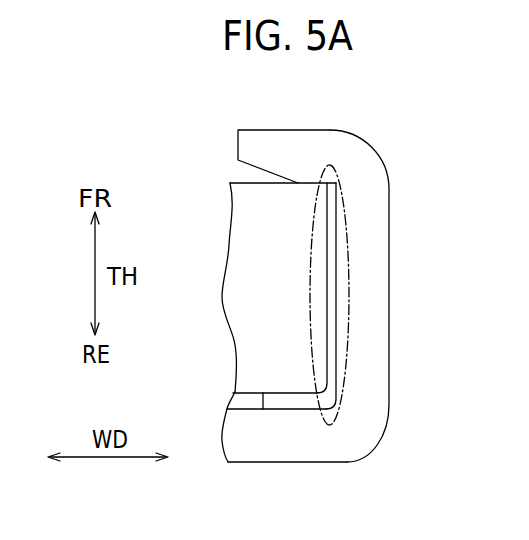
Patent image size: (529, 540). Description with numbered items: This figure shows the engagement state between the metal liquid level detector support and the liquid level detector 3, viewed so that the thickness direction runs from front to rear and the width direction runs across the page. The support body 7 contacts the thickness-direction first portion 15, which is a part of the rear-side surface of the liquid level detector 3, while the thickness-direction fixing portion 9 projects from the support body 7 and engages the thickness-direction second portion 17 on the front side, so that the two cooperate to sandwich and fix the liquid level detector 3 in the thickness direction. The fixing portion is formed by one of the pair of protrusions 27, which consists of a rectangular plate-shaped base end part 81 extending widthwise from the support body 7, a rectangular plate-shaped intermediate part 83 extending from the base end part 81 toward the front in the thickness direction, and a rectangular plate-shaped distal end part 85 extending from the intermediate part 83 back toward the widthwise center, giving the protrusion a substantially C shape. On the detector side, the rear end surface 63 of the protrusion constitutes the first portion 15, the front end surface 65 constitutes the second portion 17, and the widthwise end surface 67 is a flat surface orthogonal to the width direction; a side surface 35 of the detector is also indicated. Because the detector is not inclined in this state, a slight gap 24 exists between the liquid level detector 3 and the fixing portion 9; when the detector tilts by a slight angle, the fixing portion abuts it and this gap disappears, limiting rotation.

The liquid level detector 3 is at (255, 297).
The support body 7 is at (242, 443).
The thickness-direction fixing portion 9 is at (376, 143).
The thickness-direction first portion 15 is at (257, 422).
The thickness-direction second portion 17 is at (310, 176).
The gap 24 is at (338, 262).
The pair of protrusions 27 is at (389, 357).
The side surface 35 is at (250, 243).
The end surface on the back side in the thickness direction 63 is at (240, 413).
The end surface on the front side in the thickness direction 65 is at (298, 183).
The end surface in the width direction 67 is at (336, 224).
The base end part 81 is at (308, 463).
The intermediate part 83 is at (389, 315).
The distal end part 85 is at (252, 128).